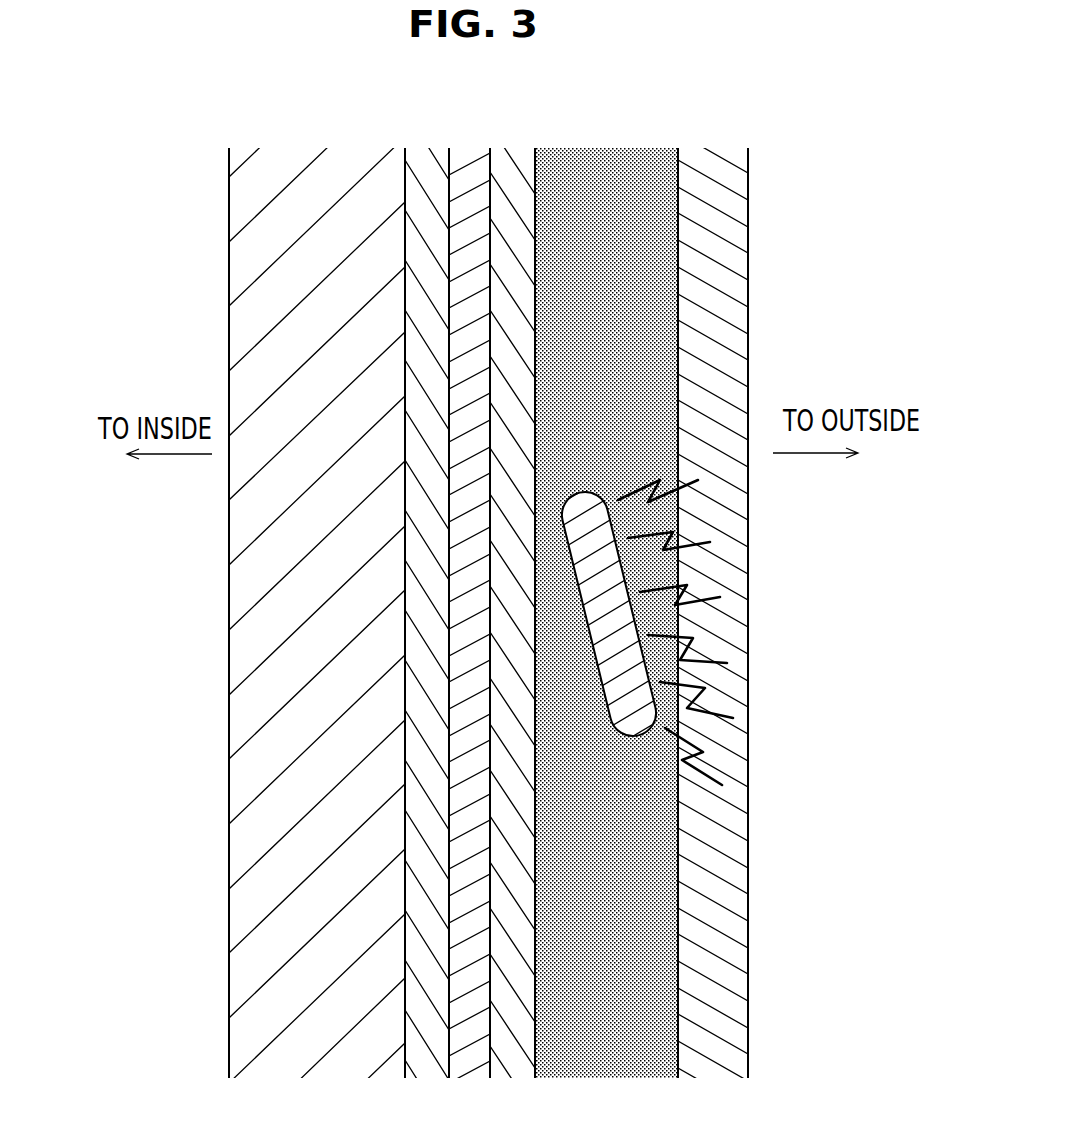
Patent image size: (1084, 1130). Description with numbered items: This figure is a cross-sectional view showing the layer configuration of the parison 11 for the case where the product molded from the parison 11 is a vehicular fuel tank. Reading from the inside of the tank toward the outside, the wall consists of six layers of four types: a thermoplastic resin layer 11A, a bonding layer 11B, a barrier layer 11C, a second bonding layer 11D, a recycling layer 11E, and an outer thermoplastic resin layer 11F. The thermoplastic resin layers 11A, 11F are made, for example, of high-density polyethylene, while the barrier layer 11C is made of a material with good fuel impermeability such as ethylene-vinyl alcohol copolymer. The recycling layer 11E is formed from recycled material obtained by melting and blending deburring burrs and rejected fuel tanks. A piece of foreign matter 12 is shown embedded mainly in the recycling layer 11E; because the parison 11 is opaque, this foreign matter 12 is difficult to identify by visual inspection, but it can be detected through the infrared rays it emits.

The parison 11 is at (195, 214).
The thermoplastic resin layer 11A is at (280, 162).
The bonding layer 11B is at (417, 162).
The barrier layer 11C is at (468, 162).
The bonding layer 11D is at (523, 160).
The recycling layer 11E is at (598, 155).
The thermoplastic resin layer 11F is at (703, 160).
The foreign matter 12 is at (632, 720).